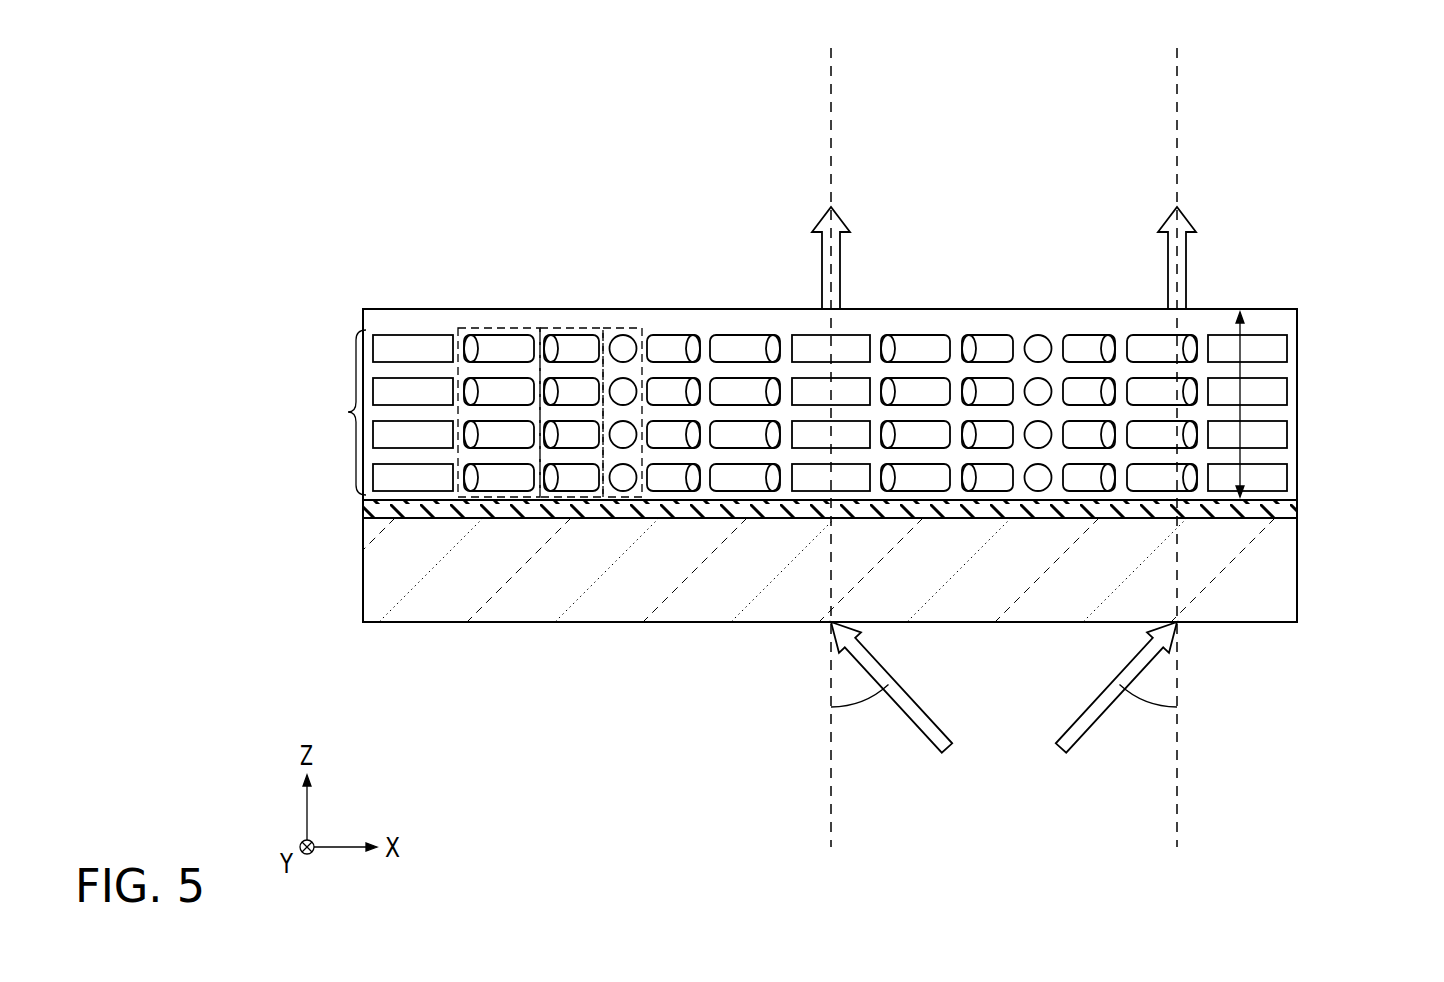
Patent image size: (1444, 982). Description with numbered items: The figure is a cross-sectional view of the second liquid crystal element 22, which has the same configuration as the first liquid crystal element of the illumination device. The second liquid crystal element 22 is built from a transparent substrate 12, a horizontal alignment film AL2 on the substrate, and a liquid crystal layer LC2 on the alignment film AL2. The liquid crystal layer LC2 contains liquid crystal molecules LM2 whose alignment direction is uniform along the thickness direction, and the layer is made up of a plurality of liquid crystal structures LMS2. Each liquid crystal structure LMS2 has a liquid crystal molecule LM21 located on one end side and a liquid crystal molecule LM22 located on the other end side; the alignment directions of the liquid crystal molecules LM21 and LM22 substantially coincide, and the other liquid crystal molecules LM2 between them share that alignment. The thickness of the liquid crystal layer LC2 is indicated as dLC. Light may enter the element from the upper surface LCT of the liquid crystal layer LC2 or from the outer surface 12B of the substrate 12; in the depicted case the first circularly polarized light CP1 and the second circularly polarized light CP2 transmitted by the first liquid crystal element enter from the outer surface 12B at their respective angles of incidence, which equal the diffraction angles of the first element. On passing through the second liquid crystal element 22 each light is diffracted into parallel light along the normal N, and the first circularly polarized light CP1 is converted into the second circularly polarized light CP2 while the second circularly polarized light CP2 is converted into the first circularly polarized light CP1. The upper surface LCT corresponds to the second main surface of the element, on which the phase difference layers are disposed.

The second liquid crystal element 22 is at (1290, 188).
The liquid crystal layer LC2 is at (1285, 412).
The upper surface of the liquid crystal layer LCT is at (706, 297).
The liquid crystal molecules LM2 is at (350, 412).
The liquid crystal molecule LM22 is at (577, 358).
The liquid crystal molecule LM21 is at (573, 482).
The liquid crystal structure LMS2 is at (620, 328).
The thickness of liquid crystal layer dLC is at (1241, 390).
The alignment film AL2 is at (1279, 511).
The substrate 12 is at (1285, 584).
The outer surface of the substrate 12B is at (668, 634).
The normal N is at (1003, 432).
The first circularly polarized light CP1 is at (1186, 263).
The second circularly polarized light CP2 is at (840, 263).